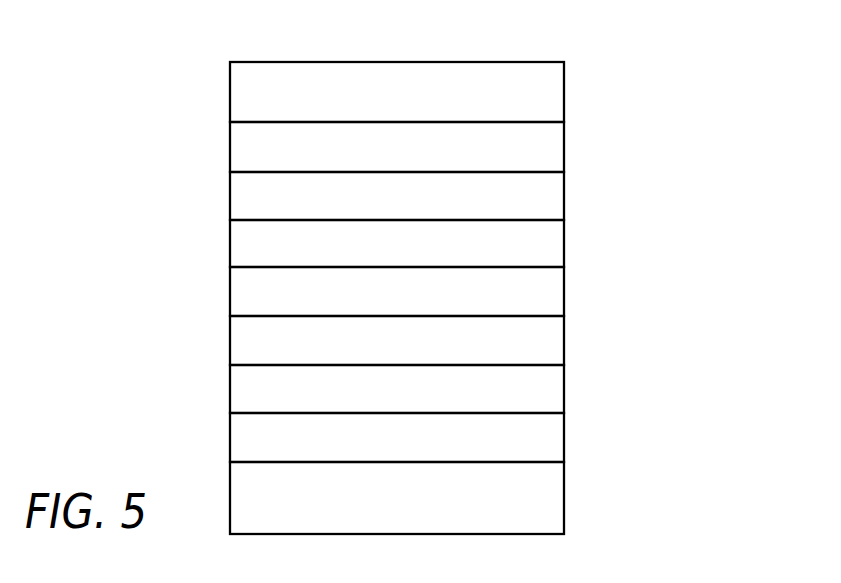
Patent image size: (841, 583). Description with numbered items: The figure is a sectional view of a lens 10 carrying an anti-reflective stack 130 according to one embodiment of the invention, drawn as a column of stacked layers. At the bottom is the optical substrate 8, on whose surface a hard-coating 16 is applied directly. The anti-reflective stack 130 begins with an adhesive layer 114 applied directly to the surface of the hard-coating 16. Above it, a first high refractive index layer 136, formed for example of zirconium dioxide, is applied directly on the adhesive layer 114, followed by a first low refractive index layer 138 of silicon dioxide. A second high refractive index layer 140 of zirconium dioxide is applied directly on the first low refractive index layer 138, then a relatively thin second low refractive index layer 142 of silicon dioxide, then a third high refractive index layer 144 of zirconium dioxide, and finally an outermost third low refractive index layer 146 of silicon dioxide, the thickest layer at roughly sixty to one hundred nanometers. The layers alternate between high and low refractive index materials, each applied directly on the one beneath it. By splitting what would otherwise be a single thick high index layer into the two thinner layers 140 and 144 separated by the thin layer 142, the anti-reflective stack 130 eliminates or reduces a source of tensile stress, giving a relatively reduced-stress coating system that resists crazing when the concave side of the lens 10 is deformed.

The lens 10 is at (108, 208).
The anti-reflective stack 130 is at (752, 172).
The third low refractive index layer 146 is at (564, 87).
The third high refractive index layer 144 is at (564, 146).
The second low refractive index layer 142 is at (564, 197).
The second high refractive index layer 140 is at (564, 244).
The first low refractive index layer 138 is at (564, 292).
The first high refractive index layer 136 is at (564, 340).
The adhesive layer 114 is at (564, 388).
The hard-coating 16 is at (564, 437).
The optical substrate 8 is at (564, 494).